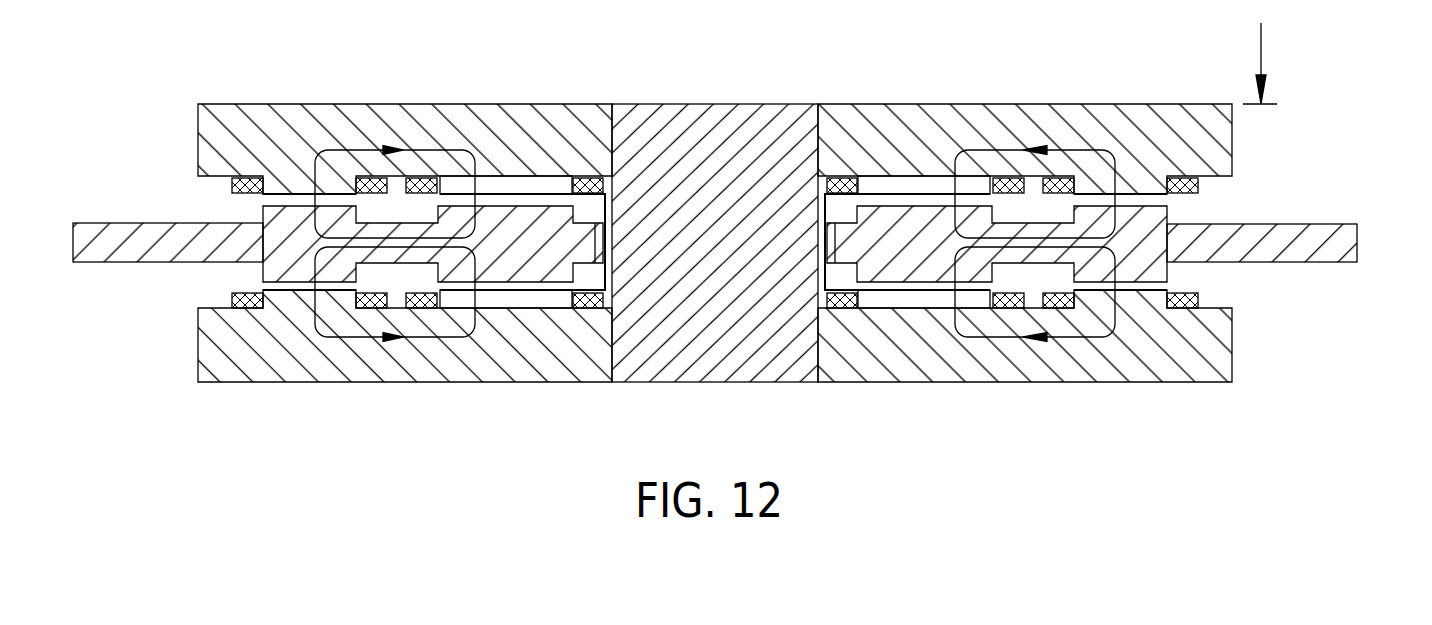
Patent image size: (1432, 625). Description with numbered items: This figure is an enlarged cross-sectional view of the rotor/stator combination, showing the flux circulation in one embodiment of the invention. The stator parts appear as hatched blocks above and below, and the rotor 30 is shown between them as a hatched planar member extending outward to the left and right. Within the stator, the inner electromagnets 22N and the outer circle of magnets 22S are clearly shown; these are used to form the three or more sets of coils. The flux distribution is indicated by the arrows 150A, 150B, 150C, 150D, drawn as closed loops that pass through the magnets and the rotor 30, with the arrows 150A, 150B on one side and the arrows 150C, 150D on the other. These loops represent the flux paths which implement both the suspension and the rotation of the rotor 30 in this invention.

The outer circle of magnets 22S is at (292, 177).
The inner electromagnets 22N is at (517, 183).
The arrow 150A is at (423, 150).
The arrow 150B is at (423, 337).
The arrow 150C is at (1003, 150).
The arrow 150D is at (1003, 337).
The rotor 30 is at (1345, 242).